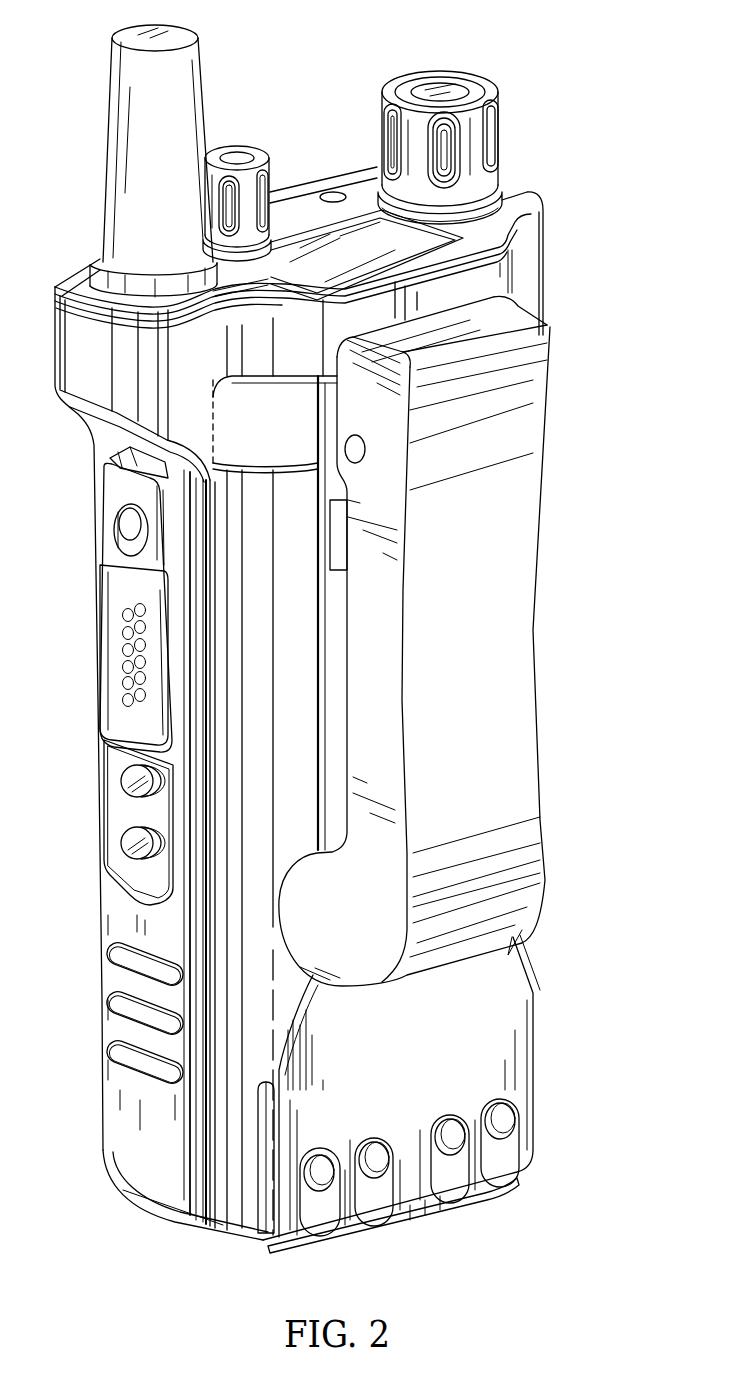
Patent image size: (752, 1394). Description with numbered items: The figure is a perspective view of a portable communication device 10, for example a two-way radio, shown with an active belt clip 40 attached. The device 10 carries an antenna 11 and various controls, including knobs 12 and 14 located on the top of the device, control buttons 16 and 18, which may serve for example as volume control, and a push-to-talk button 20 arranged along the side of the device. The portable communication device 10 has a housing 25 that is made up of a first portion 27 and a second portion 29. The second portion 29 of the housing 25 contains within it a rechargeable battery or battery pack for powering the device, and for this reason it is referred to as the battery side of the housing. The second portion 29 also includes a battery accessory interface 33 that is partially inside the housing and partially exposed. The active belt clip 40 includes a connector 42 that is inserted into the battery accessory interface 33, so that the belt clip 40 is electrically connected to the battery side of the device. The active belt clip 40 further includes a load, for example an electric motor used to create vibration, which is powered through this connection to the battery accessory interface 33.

The portable communication device 10 is at (574, 161).
The antenna 11 is at (133, 150).
The knob 12 is at (243, 156).
The knob 14 is at (444, 80).
The control button 16 is at (128, 790).
The control button 18 is at (130, 858).
The push-to-talk button 20 is at (112, 652).
The housing 25 is at (117, 1230).
The first portion 27 is at (150, 1128).
The second portion 29 is at (508, 1030).
The battery accessory interface 33 is at (451, 641).
The active belt clip 40 is at (477, 687).
The connector 42 is at (306, 418).